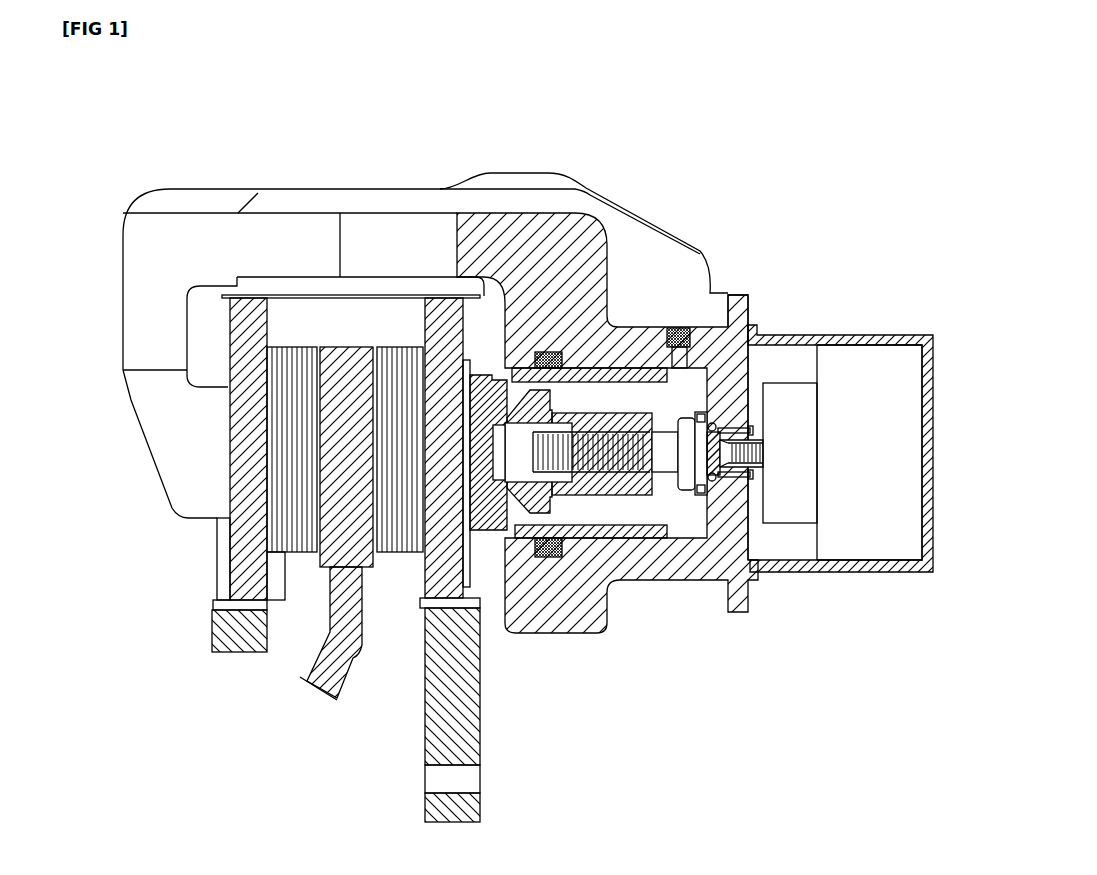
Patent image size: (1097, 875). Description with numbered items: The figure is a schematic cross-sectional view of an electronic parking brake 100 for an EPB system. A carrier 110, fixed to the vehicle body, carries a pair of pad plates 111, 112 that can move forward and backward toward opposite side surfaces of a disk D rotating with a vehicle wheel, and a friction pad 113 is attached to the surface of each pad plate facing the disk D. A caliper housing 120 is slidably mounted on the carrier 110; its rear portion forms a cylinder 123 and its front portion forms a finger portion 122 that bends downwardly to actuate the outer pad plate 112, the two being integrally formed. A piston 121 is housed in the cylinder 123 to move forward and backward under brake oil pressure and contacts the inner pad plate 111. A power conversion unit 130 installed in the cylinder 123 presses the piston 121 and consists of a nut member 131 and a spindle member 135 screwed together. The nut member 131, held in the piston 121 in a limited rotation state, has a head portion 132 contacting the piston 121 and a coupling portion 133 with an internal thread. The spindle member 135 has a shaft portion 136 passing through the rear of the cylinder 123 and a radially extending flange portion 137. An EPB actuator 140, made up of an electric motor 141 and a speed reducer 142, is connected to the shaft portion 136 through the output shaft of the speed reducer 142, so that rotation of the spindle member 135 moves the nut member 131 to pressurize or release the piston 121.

The electronic parking brake 100 is at (565, 142).
The carrier 110 is at (438, 742).
The inner pad plate 111 is at (437, 582).
The outer pad plate 112 is at (240, 548).
The friction pad 113 is at (300, 552).
The disk D is at (333, 668).
The caliper housing 120 is at (330, 203).
The piston 121 is at (481, 515).
The finger portion 122 is at (152, 422).
The cylinder 123 is at (745, 298).
The power conversion unit 130 is at (618, 392).
The nut member 131 is at (613, 742).
The head portion 132 is at (523, 527).
The coupling portion 133 is at (605, 487).
The spindle member 135 is at (773, 705).
The shaft portion 136 is at (717, 482).
The flange portion 137 is at (686, 473).
The EPB actuator 140 is at (908, 262).
The electric motor 141 is at (792, 397).
The speed reducer 142 is at (885, 397).